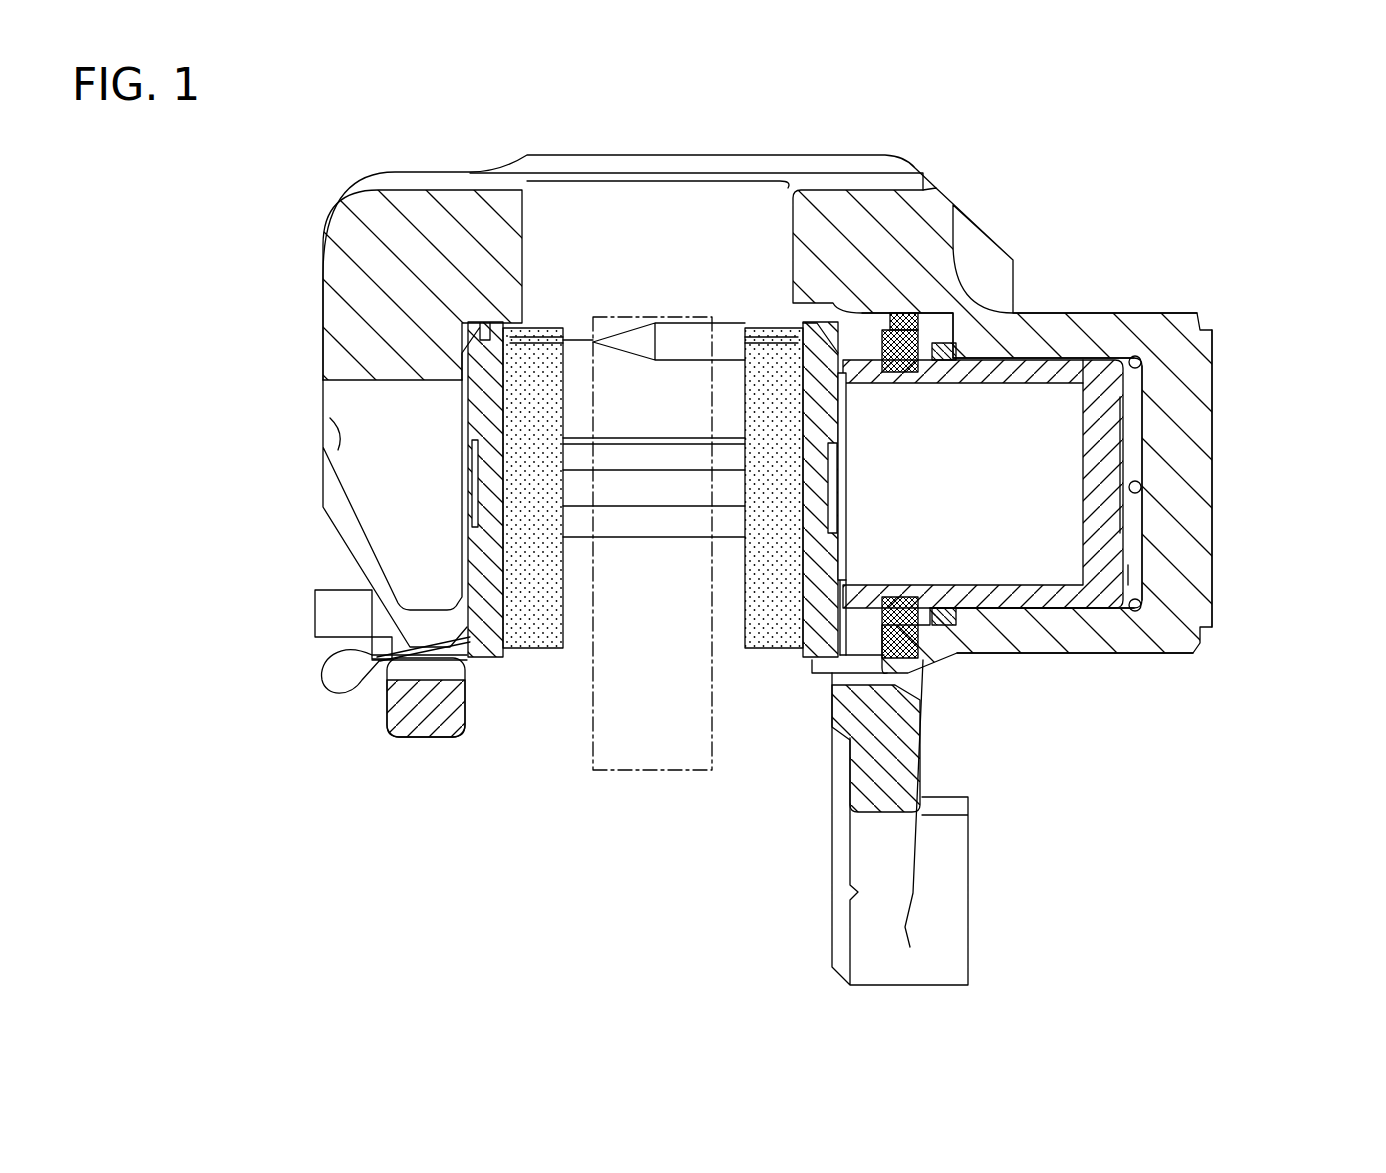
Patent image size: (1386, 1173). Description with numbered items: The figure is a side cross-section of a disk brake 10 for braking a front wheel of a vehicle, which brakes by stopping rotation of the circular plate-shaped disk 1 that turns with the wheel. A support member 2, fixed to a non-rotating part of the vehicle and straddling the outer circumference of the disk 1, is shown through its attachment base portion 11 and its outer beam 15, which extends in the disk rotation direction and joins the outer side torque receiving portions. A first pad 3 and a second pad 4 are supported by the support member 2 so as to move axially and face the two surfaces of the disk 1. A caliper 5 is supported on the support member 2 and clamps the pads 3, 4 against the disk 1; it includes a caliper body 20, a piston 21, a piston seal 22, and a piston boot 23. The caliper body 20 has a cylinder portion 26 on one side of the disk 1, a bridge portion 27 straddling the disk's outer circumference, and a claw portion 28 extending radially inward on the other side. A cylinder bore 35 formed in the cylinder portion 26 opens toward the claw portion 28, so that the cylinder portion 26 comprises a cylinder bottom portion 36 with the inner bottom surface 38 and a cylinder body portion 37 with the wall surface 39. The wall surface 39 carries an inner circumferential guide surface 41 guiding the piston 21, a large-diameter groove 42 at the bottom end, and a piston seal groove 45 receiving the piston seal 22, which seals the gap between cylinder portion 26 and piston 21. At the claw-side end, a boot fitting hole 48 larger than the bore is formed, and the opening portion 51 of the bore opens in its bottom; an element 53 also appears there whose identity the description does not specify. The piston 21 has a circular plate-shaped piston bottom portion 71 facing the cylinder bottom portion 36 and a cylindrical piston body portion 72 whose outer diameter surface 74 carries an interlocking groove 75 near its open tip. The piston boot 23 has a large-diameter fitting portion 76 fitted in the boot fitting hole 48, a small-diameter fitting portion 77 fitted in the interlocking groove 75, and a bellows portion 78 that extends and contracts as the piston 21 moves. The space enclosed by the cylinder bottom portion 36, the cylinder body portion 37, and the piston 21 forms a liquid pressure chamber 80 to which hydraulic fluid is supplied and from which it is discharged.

The disk 1 is at (593, 718).
The support member 2 is at (985, 940).
The first pad 3 is at (762, 318).
The second pad 4 is at (540, 320).
The caliper 5 is at (975, 185).
The disk brake 10 is at (1250, 190).
The attachment base portion 11 is at (943, 883).
The outer beam 15 is at (428, 715).
The caliper body 20 is at (330, 185).
The piston 21 is at (1058, 342).
The piston seal 22 is at (943, 350).
The piston boot 23 is at (843, 662).
The cylinder portion 26 is at (1023, 635).
The bridge portion 27 is at (655, 175).
The claw portion 28 is at (375, 495).
The cylinder bore 35 is at (1052, 595).
The cylinder bottom portion 36 is at (1180, 395).
The cylinder body portion 37 is at (1105, 633).
The inner bottom surface 38 is at (1142, 490).
The wall surface 39 is at (1080, 597).
The inner circumferential guide surface 41 is at (1138, 368).
The large-diameter groove 42 is at (1140, 605).
The piston seal groove 45 is at (943, 615).
The boot fitting hole 48 is at (893, 313).
The opening portion 51 is at (917, 600).
The cylinder bottom 53 is at (1135, 355).
The piston bottom portion 71 is at (1108, 440).
The piston body portion 72 is at (1015, 365).
The outer diameter surface 74 is at (1088, 362).
The interlocking groove 75 is at (880, 603).
The large-diameter fitting portion 76 is at (940, 345).
The small-diameter fitting portion 77 is at (858, 372).
The bellows portion 78 is at (866, 320).
The liquid pressure chamber 80 is at (1133, 575).